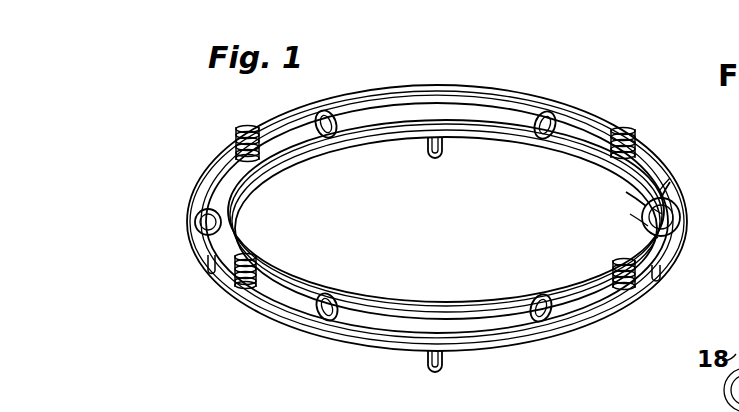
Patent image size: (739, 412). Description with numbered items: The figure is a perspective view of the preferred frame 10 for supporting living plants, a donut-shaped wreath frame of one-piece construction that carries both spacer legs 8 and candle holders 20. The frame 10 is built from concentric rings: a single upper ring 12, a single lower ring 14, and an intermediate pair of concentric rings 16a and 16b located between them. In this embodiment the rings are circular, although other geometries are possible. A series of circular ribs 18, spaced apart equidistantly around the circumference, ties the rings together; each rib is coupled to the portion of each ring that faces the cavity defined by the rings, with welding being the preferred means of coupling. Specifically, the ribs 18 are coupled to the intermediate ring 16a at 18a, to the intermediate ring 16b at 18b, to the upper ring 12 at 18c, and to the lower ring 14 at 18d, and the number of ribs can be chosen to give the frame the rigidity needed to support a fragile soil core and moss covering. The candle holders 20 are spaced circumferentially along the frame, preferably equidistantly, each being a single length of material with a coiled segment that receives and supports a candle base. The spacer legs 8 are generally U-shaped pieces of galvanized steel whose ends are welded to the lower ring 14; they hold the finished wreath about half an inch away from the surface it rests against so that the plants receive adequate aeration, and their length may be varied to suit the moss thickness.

The frame 10 is at (268, 322).
The upper ring 12 is at (458, 92).
The lower ring 14 is at (512, 145).
The intermediate ring 16a is at (626, 193).
The intermediate ring 16b is at (664, 200).
The ribs 18 is at (330, 110).
The coupling of rib to intermediate ring 18a is at (628, 217).
The coupling of rib to intermediate ring 18b is at (670, 213).
The coupling of rib to upper ring 18c is at (666, 195).
The coupling of rib to lower ring 18d is at (657, 236).
The candle holders 20 is at (240, 130).
The spacer legs 8 is at (428, 362).